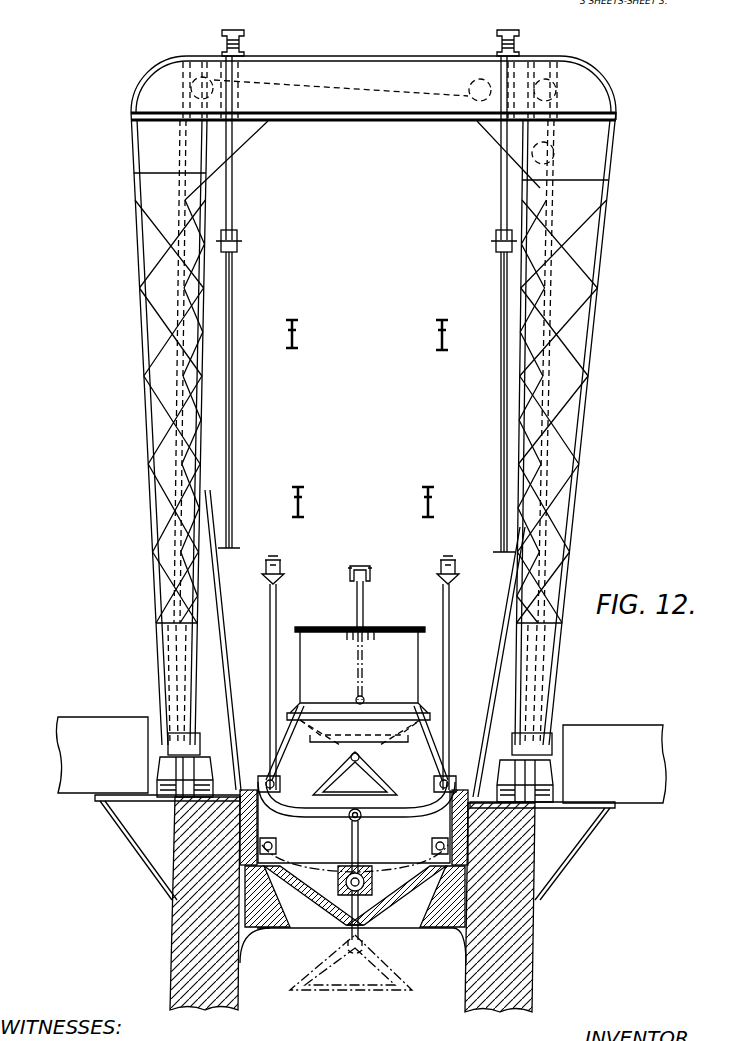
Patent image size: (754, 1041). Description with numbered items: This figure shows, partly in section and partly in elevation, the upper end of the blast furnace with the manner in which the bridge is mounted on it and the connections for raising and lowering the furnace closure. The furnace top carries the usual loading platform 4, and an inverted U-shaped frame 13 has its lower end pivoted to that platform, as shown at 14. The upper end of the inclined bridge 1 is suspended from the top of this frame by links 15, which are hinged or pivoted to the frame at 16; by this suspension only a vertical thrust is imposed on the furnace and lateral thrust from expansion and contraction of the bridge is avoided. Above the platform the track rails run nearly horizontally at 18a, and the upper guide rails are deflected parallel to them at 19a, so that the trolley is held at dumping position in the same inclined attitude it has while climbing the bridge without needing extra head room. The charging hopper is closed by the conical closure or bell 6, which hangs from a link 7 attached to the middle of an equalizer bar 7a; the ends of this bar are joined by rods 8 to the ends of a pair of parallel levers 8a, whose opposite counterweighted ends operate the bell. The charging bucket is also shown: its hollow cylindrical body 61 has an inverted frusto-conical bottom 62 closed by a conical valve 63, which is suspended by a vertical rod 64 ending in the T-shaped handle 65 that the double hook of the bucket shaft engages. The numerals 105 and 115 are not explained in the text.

The inclined bridge 1 is at (235, 423).
The loading platform 4 is at (361, 808).
The conical closure or bell 6 is at (381, 900).
The link 7 is at (358, 826).
The equalizer bar 7a is at (401, 819).
The rods 8 is at (269, 647).
The parallel levers 8a is at (282, 567).
The inverted U-shaped frame 13 is at (420, 125).
The pivot 14 is at (198, 748).
The links 15 is at (237, 186).
The hinge or pivot 16 is at (245, 50).
The nearly horizontal rail portions 18a is at (420, 502).
The deflected rail portions 19a is at (436, 340).
The hollow cylindrical body 61 is at (358, 673).
The inverted frusto-conical bottom 62 is at (397, 733).
The conical valve 63 is at (338, 738).
The vertical rod 64 is at (362, 622).
The T-shaped handle 65 is at (368, 568).
The pier 105 is at (242, 892).
The column chord 115 is at (533, 34).